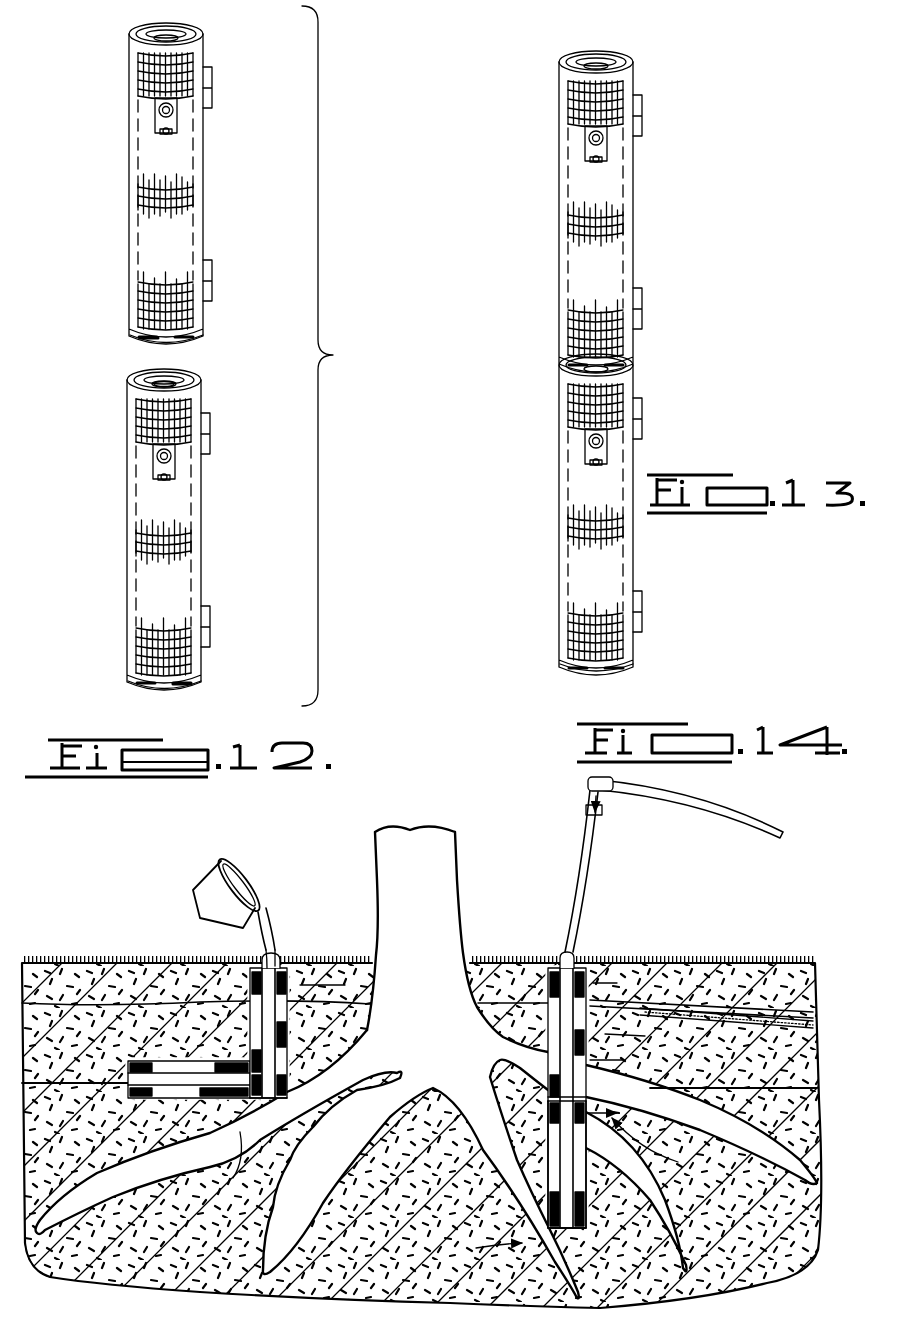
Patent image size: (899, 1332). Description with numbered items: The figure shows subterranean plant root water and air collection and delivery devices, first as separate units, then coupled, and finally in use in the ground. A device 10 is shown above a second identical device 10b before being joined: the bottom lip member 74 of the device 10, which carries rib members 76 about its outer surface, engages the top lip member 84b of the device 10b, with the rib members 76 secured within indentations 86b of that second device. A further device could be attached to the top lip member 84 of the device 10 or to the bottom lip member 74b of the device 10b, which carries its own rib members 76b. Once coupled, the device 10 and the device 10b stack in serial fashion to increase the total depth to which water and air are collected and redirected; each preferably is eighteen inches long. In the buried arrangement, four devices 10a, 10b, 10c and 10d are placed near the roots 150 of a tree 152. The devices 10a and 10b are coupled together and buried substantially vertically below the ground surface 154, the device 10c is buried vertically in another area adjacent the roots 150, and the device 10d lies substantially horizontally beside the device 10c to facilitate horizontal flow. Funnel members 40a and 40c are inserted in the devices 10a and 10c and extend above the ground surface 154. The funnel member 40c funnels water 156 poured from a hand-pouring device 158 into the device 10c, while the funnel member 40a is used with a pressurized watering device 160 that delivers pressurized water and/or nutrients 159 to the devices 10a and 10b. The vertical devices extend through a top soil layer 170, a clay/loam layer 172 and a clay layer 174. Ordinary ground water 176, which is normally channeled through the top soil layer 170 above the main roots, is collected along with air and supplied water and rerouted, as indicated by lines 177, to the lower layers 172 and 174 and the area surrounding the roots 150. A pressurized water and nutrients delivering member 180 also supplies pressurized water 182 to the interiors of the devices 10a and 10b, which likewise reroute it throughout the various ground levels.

In FIG. 12, the subterranean plant root water and air collection and delivery device 10 is at (97, 130).
In FIG. 13, the subterranean plant root water and air collection and delivery device 10 is at (703, 170).
In FIG. 14, the subterranean plant root water and air collection and delivery device 10a is at (605, 1034).
In FIG. 12, the second identical subterranean plant root water and air collection and delivery d 10b is at (103, 512).
In FIG. 13, the second identical subterranean plant root water and air collection and delivery d 10b is at (668, 412).
In FIG. 14, the second identical subterranean plant root water and air collection and delivery d 10b is at (603, 1213).
In FIG. 14, the subterranean plant root water and air collection and delivery device 10c is at (242, 1029).
In FIG. 14, the subterranean plant root water and air collection and delivery device 10d is at (152, 1060).
In FIG. 14, the funnel member 40a is at (570, 958).
In FIG. 14, the funnel member 40c is at (272, 958).
In FIG. 12, the bottom lip member 74 is at (190, 338).
In FIG. 12, the bottom lip member 74b is at (182, 684).
In FIG. 12, the rib members 76 is at (135, 338).
In FIG. 12, the rib members 76b is at (140, 683).
In FIG. 13, the rib members 76b is at (640, 652).
In FIG. 12, the top lip member 84 is at (205, 35).
In FIG. 13, the top lip member 84 is at (630, 58).
In FIG. 12, the top lip member 84b is at (196, 376).
In FIG. 12, the indentations 86b is at (150, 384).
In FIG. 14, the roots 150 is at (130, 1182).
In FIG. 14, the tree 152 is at (455, 888).
In FIG. 14, the ground surface 154 is at (112, 950).
In FIG. 14, the water 156 is at (276, 930).
In FIG. 14, the hand-pouring device 158 is at (208, 885).
In FIG. 14, the pressurized water and/or nutrients 159 is at (592, 784).
In FIG. 14, the pressurized watering device 160 is at (600, 818).
In FIG. 14, the top soil layer 170 is at (60, 975).
In FIG. 14, the clay/loam layer 172 is at (35, 1068).
In FIG. 14, the clay layer 174 is at (28, 1272).
In FIG. 14, the ground water 176 is at (237, 983).
In FIG. 14, the lines 177 is at (466, 1121).
In FIG. 14, the pressurized water and nutrients delivering member 180 is at (775, 1015).
In FIG. 14, the pressurized water 182 is at (662, 1003).